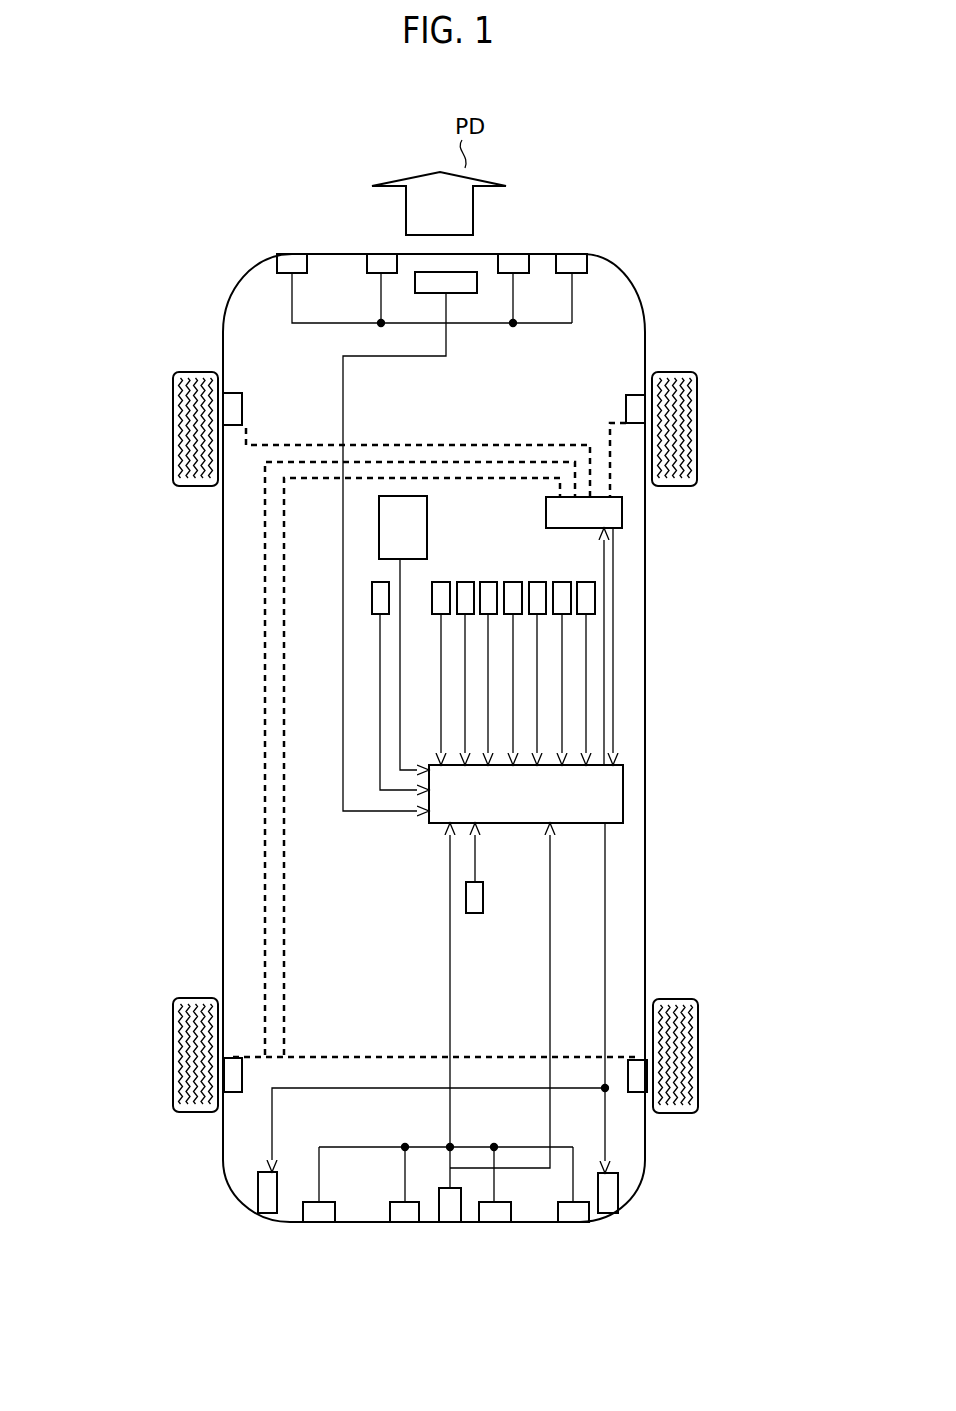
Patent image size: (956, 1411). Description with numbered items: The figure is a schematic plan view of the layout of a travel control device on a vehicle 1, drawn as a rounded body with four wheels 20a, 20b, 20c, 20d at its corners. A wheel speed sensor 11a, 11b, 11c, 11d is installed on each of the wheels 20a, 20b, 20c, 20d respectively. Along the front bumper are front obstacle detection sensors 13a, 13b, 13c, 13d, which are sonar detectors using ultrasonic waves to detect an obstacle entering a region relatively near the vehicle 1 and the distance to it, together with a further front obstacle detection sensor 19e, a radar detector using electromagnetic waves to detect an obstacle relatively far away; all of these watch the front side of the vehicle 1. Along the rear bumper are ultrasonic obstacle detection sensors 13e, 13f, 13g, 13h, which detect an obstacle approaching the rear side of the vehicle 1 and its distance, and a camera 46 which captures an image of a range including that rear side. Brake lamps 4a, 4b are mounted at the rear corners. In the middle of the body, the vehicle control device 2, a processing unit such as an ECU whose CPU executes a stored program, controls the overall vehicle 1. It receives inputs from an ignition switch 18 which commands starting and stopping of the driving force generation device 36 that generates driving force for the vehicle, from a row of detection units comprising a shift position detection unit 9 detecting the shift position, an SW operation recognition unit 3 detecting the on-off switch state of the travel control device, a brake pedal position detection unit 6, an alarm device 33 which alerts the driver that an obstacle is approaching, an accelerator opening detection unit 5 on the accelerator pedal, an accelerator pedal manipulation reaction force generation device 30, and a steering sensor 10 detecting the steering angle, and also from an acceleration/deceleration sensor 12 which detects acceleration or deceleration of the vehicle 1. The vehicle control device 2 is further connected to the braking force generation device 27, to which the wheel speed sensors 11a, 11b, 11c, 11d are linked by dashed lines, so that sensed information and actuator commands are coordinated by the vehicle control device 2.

The vehicle 1 is at (664, 125).
The vehicle control device 2 is at (623, 793).
The SW operation recognition unit 3 is at (465, 581).
The brake lamp 4a is at (258, 1200).
The brake lamp 4b is at (618, 1200).
The accelerator opening detection unit 5 is at (537, 581).
The brake pedal position detection unit 6 is at (488, 581).
The shift position detection unit 9 is at (441, 581).
The steering sensor 10 is at (587, 581).
The wheel speed sensor 11a is at (231, 412).
The wheel speed sensor 11b is at (635, 412).
The wheel speed sensor 11c is at (231, 1076).
The wheel speed sensor 11d is at (636, 1076).
The acceleration/deceleration sensor 12 is at (476, 914).
The front obstacle detection sensor 13a is at (297, 264).
The front obstacle detection sensor 13b is at (385, 264).
The front obstacle detection sensor 13c is at (520, 264).
The front obstacle detection sensor 13d is at (579, 264).
The ultrasonic obstacle detection sensor 13e is at (320, 1224).
The ultrasonic obstacle detection sensor 13f is at (403, 1224).
The ultrasonic obstacle detection sensor 13g is at (494, 1224).
The ultrasonic obstacle detection sensor 13h is at (573, 1224).
The ignition switch 18 is at (372, 598).
The front obstacle detection sensor 19e is at (462, 298).
The wheel 20a is at (173, 467).
The wheel 20b is at (697, 465).
The wheel 20c is at (173, 1035).
The wheel 20d is at (697, 1027).
The braking force generation device 27 is at (622, 512).
The accelerator pedal manipulation reaction force generation device 30 is at (562, 581).
The alarm device 33 is at (513, 581).
The driving force generation device 36 is at (427, 504).
The camera 46 is at (452, 1224).